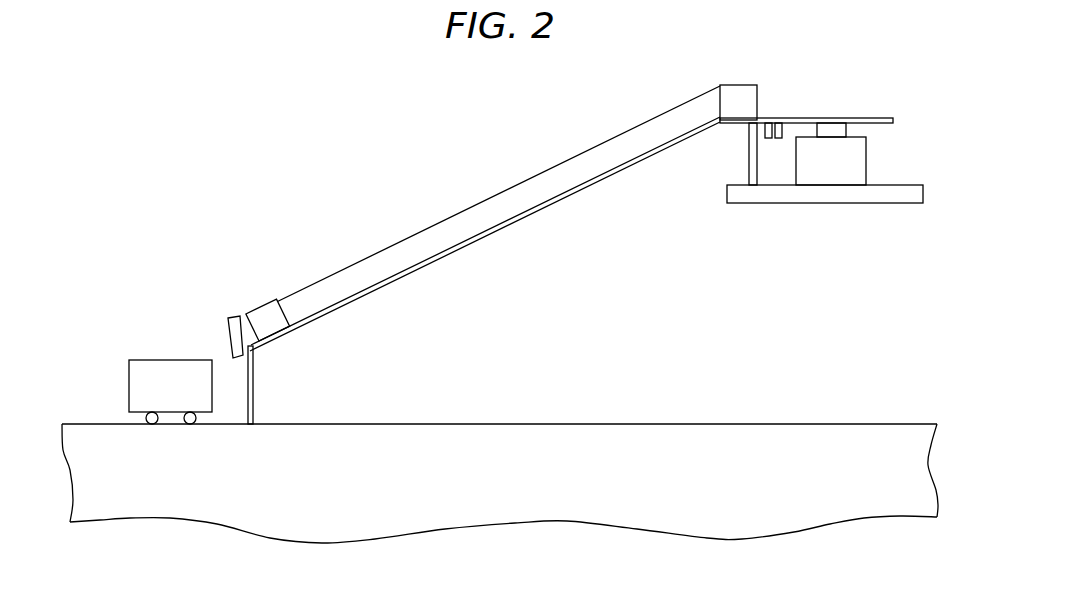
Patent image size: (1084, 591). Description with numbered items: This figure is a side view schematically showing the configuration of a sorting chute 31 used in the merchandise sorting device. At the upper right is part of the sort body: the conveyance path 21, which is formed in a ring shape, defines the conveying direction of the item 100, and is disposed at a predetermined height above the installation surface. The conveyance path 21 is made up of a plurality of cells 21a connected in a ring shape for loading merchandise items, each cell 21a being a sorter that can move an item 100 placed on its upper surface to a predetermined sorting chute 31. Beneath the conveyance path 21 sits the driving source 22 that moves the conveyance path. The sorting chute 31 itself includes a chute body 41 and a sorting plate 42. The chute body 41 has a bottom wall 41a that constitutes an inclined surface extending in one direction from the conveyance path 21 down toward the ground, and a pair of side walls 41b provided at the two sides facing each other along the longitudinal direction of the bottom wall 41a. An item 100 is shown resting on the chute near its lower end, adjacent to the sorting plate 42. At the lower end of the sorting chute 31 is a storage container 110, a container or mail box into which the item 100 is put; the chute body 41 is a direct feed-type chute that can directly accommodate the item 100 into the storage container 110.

The sorting chute 31 is at (458, 246).
The chute body 41 is at (485, 218).
The bottom wall 41a is at (518, 220).
The side walls 41b is at (546, 188).
The sorting plate 42 is at (232, 316).
The item 100 is at (262, 310).
The storage container 110 is at (129, 383).
The conveyance path 21 is at (882, 114).
The cell 21a is at (793, 114).
The driving source 22 is at (868, 158).